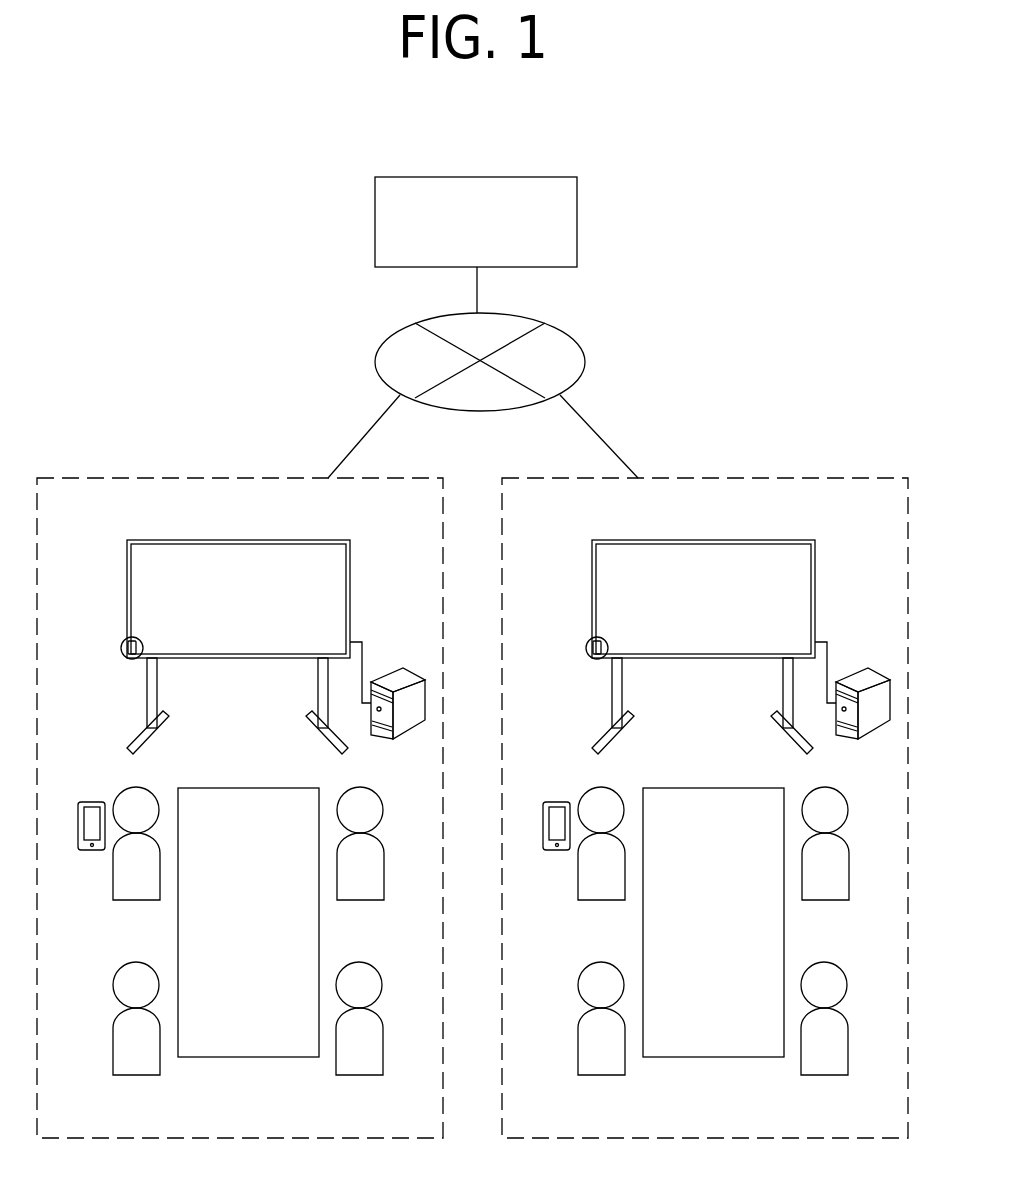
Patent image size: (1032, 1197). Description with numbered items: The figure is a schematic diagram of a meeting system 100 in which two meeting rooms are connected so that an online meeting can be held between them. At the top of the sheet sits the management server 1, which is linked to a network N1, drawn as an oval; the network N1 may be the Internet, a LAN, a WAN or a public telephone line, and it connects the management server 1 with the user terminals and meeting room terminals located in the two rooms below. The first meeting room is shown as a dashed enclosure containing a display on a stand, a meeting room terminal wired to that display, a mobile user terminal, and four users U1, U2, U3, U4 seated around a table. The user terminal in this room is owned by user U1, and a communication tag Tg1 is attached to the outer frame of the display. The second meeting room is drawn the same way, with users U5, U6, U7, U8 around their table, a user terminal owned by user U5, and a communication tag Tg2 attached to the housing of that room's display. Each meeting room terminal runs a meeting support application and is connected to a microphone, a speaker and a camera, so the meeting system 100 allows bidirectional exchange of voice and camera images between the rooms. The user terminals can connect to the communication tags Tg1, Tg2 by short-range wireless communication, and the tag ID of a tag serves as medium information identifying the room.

The meeting system 100 is at (752, 127).
The management server 1 is at (510, 177).
The network N1 is at (376, 360).
The communication tag Tg1 is at (121, 648).
The communication tag Tg2 is at (567, 648).
The user U1 is at (136, 861).
The user U2 is at (136, 1035).
The user U3 is at (360, 861).
The user U4 is at (359, 1035).
The user U5 is at (601, 861).
The user U6 is at (601, 1035).
The user U7 is at (825, 861).
The user U8 is at (824, 1035).